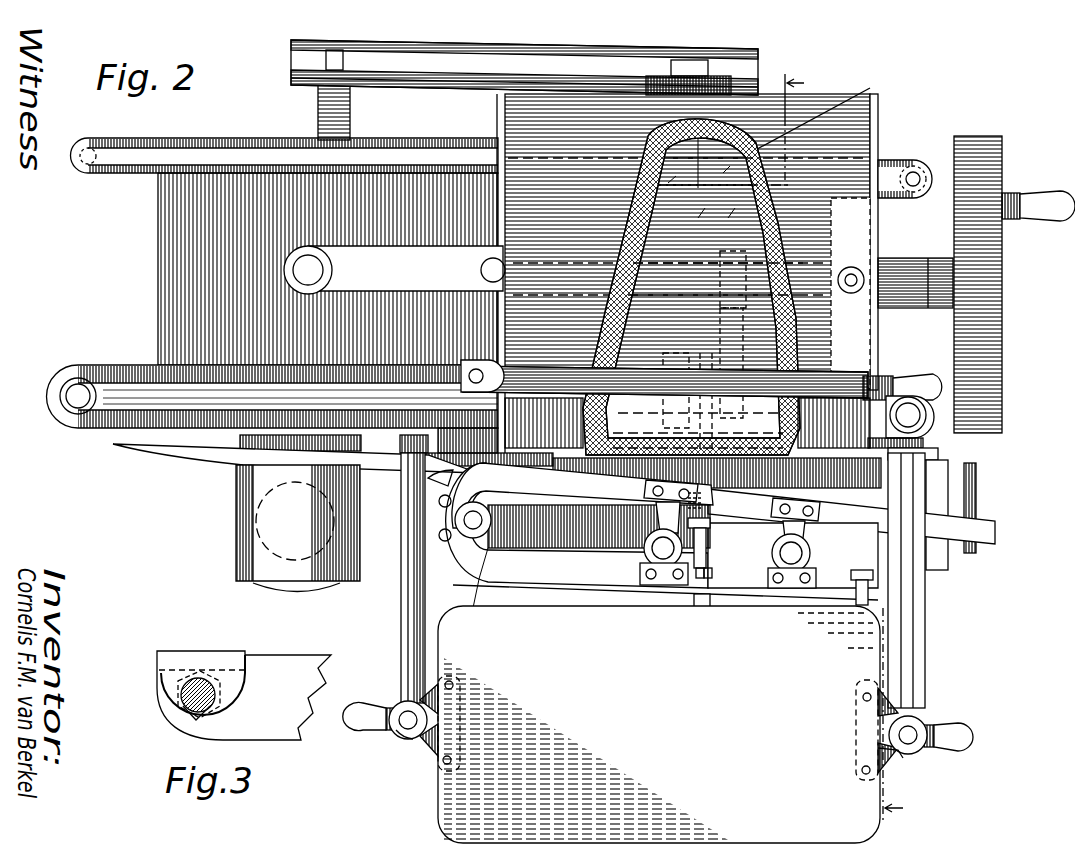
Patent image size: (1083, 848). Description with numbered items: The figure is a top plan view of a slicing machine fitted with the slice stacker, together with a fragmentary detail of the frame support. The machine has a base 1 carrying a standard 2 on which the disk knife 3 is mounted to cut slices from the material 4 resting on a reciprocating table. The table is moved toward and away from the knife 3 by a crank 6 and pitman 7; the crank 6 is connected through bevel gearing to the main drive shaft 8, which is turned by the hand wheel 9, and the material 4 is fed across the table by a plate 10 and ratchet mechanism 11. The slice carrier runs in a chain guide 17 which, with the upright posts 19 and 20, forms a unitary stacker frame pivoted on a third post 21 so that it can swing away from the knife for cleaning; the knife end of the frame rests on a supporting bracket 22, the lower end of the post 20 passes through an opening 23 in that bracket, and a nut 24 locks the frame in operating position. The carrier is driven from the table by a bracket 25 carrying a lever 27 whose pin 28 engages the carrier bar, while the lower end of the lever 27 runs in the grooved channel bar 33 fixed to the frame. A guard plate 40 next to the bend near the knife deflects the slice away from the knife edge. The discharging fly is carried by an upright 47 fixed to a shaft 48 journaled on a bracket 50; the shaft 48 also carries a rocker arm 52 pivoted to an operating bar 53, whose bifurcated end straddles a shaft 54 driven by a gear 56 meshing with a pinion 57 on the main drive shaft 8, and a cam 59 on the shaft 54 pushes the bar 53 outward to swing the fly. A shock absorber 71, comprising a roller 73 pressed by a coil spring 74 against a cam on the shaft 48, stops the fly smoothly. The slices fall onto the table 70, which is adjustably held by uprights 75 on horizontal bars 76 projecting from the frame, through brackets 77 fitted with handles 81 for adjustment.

In FIG. 2, the base 1 is at (180, 327).
In FIG. 2, the standard 2 is at (250, 505).
In FIG. 2, the disk knife 3 is at (208, 455).
In FIG. 2, the material 4 is at (833, 443).
In FIG. 2, the crank 6 is at (394, 270).
In FIG. 2, the pitman 7 is at (588, 332).
In FIG. 2, the main drive shaft 8 is at (612, 224).
In FIG. 2, the hand wheel 9 is at (948, 325).
In FIG. 2, the plate 10 is at (838, 126).
In FIG. 2, the ratchet mechanism 11 is at (750, 62).
In FIG. 2, the chain guide 17 is at (658, 532).
In FIG. 2, the upright post 19 is at (655, 540).
In FIG. 2, the upright post 20 is at (478, 528).
In FIG. 3, the upright post 20 is at (210, 690).
In FIG. 2, the third post 21 is at (783, 585).
In FIG. 2, the supporting bracket 22 is at (582, 494).
In FIG. 3, the supporting bracket 22 is at (158, 678).
In FIG. 3, the opening 23 is at (200, 710).
In FIG. 3, the nut 24 is at (182, 710).
In FIG. 2, the bracket 25 is at (930, 434).
In FIG. 2, the lever 27 is at (941, 515).
In FIG. 2, the pin 28 is at (962, 500).
In FIG. 2, the channel bar 33 is at (858, 540).
In FIG. 2, the guard plate 40 is at (425, 478).
In FIG. 2, the upright 47 is at (868, 582).
In FIG. 2, the shaft 48 is at (862, 590).
In FIG. 2, the bracket 50 is at (565, 540).
In FIG. 2, the rocker arm 52 is at (690, 600).
In FIG. 2, the operating bar 53 is at (668, 593).
In FIG. 2, the shaft 54 is at (672, 345).
In FIG. 2, the gear 56 is at (738, 332).
In FIG. 2, the pinion 57 is at (712, 250).
In FIG. 2, the cam 59 is at (700, 342).
In FIG. 2, the table 70 is at (442, 787).
In FIG. 2, the shock absorber 71 is at (690, 570).
In FIG. 2, the roller 73 is at (704, 570).
In FIG. 2, the coil spring 74 is at (793, 502).
In FIG. 2, the upright 75 is at (386, 727).
In FIG. 2, the horizontal bar 76 is at (398, 583).
In FIG. 2, the bracket 77 is at (884, 750).
In FIG. 2, the handle 81 is at (358, 697).